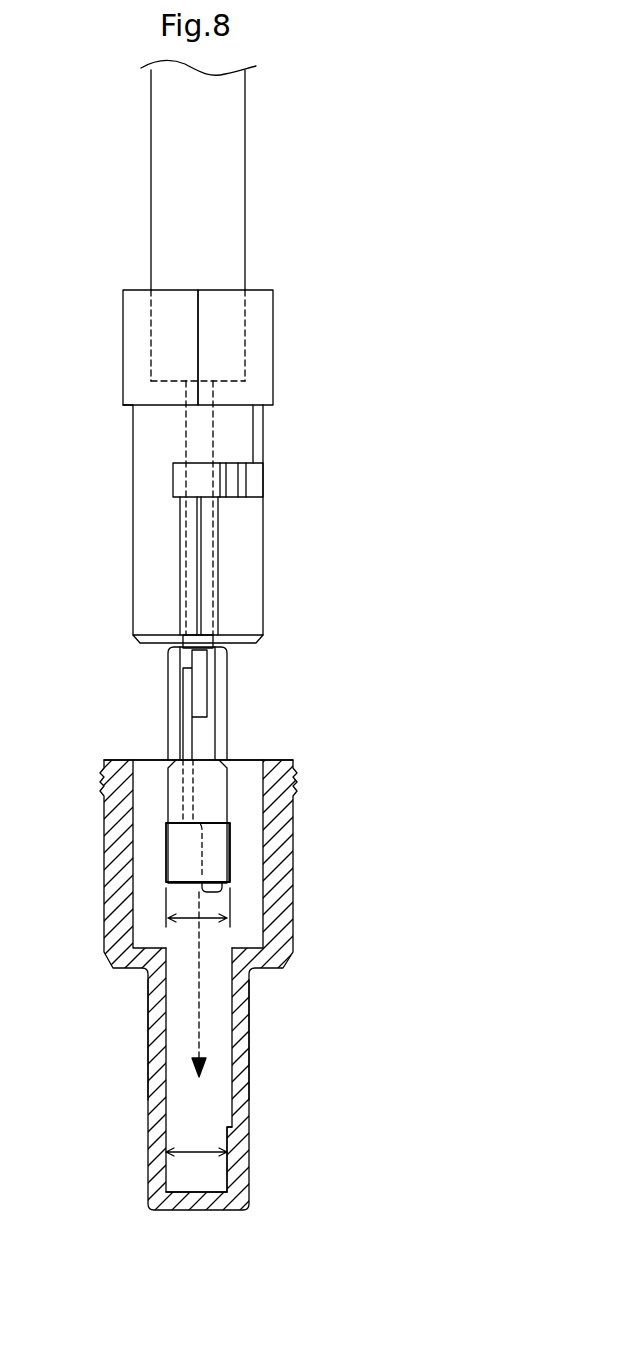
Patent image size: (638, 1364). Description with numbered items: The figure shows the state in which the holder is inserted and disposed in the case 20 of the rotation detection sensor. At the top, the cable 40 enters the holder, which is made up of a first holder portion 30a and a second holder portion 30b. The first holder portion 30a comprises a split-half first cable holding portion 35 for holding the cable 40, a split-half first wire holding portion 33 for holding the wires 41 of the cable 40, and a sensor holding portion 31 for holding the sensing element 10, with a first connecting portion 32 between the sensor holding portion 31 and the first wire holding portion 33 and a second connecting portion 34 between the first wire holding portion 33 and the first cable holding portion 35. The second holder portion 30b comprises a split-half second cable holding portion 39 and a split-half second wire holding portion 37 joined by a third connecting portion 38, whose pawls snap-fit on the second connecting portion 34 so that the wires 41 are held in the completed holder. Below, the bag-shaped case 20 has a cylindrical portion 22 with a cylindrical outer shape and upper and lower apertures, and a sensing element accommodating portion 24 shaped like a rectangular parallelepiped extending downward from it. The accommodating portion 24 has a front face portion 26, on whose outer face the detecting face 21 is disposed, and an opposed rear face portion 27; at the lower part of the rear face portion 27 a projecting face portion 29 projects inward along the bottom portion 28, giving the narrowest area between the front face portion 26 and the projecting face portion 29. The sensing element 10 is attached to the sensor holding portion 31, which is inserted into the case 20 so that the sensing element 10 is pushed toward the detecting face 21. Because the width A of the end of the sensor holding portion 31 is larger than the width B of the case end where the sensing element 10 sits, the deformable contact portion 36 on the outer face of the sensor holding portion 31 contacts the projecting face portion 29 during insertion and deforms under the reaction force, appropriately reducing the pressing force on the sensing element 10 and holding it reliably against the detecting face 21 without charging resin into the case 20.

The sensing element 10 is at (167, 857).
The case 20 is at (319, 980).
The detecting face 21 is at (148, 1142).
The cylindrical portion 22 is at (293, 888).
The sensing element accommodating portion 24 is at (188, 1019).
The front face portion 26 is at (158, 1037).
The rear face portion 27 is at (242, 1030).
The bottom portion 28 is at (190, 1192).
The projecting face portion 29 is at (227, 1160).
The first holder portion 30a is at (207, 326).
The second holder portion 30b is at (196, 515).
The sensor holding portion 31 is at (201, 806).
The first connecting portion 32 is at (225, 700).
The first wire holding portion 33 is at (257, 578).
The second connecting portion 34 is at (255, 482).
The first cable holding portion 35 is at (273, 323).
The contact portion 36 is at (230, 850).
The second wire holding portion 37 is at (140, 543).
The third connecting portion 38 is at (243, 433).
The second cable holding portion 39 is at (132, 347).
The cable 40 is at (233, 138).
The wires 41 is at (203, 663).
The width of the end of the sensor holding portion A is at (187, 917).
The width of the end of the case B is at (196, 1141).